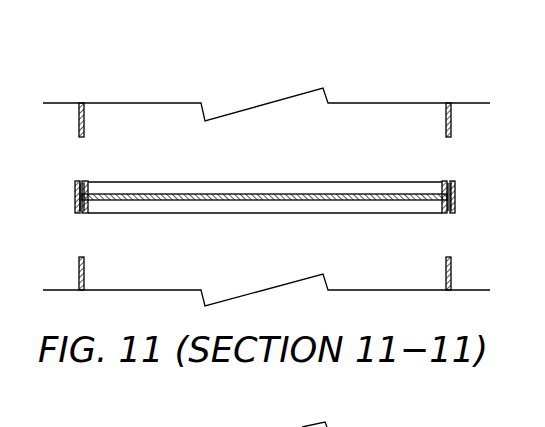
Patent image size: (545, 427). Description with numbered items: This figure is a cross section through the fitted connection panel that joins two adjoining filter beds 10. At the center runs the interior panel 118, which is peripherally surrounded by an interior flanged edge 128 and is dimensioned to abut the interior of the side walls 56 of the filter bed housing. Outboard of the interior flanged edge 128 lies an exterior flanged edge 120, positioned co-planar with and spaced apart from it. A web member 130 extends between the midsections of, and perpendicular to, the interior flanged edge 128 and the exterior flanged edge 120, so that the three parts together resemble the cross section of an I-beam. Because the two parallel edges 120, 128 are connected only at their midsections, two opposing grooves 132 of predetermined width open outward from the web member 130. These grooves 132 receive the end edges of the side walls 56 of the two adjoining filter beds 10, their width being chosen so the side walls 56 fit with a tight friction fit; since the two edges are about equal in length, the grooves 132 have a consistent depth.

The filter bed 10 is at (455, 126).
The side walls 56 is at (86, 121).
The interior panel 118 is at (218, 196).
The exterior flanged edge 120 is at (76, 205).
The interior flanged edge 128 is at (86, 181).
The web member 130 is at (79, 181).
The grooves 132 is at (84, 214).